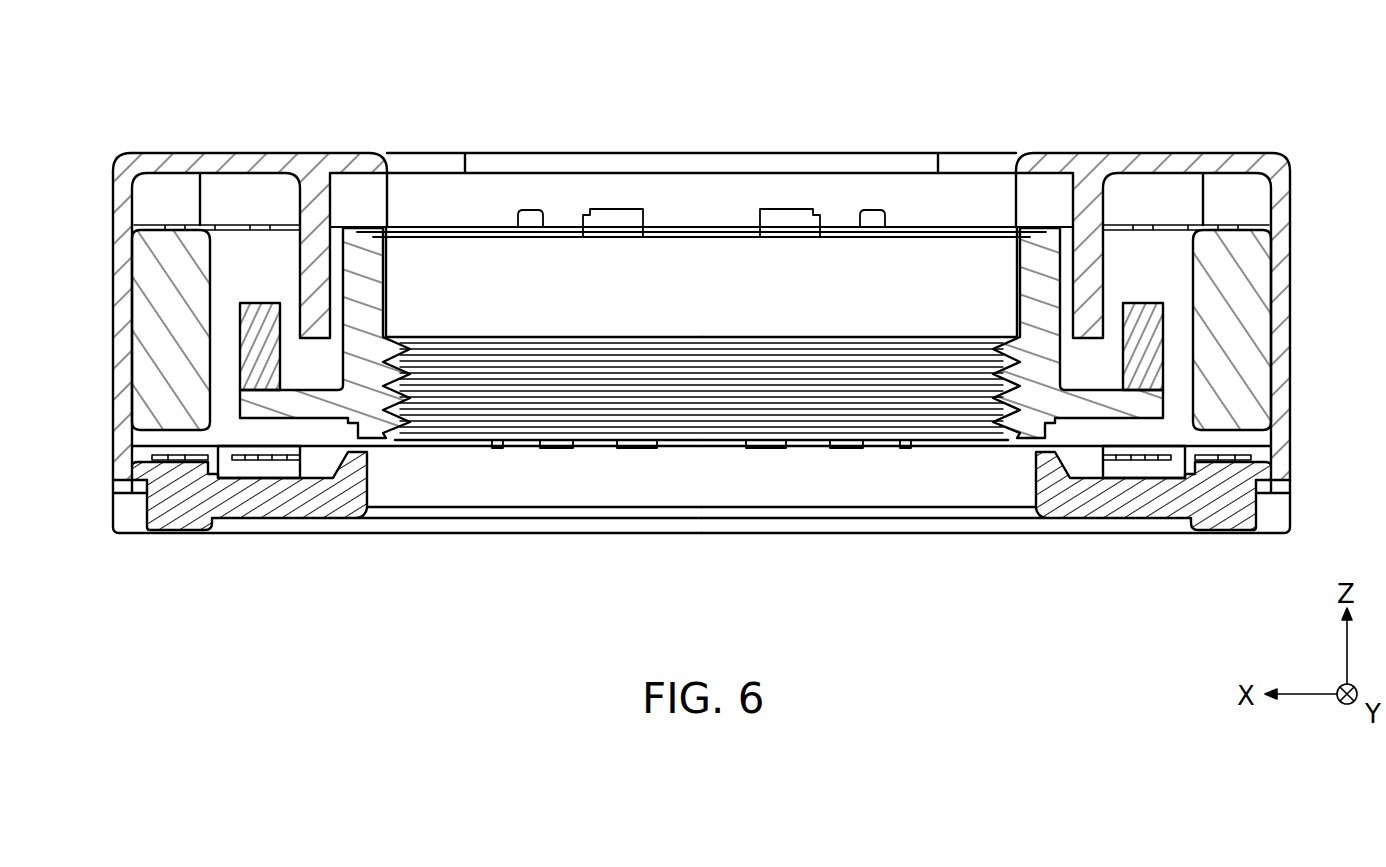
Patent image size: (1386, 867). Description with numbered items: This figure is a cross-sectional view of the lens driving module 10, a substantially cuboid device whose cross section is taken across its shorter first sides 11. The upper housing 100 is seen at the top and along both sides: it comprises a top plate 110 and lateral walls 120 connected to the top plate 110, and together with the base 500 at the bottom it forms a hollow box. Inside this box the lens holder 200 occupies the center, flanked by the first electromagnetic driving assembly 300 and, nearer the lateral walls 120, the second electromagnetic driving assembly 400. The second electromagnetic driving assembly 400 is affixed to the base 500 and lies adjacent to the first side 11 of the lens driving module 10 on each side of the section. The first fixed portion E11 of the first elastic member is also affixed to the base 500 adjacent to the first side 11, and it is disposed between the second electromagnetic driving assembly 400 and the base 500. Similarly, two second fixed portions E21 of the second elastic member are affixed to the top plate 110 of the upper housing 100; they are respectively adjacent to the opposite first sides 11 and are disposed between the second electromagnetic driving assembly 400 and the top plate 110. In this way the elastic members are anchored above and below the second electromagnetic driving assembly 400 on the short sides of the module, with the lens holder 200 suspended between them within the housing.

The lens driving module 10 is at (1385, 53).
The first side 11 is at (114, 305).
The upper housing 100 is at (123, 161).
The top plate 110 is at (260, 162).
The lateral walls 120 is at (122, 389).
The lens holder 200 is at (353, 263).
The first electromagnetic driving assembly 300 is at (253, 351).
The second electromagnetic driving assembly 400 is at (165, 263).
The base 500 is at (167, 512).
The first fixed portion E11 is at (190, 460).
The second fixed portion E21 is at (150, 214).